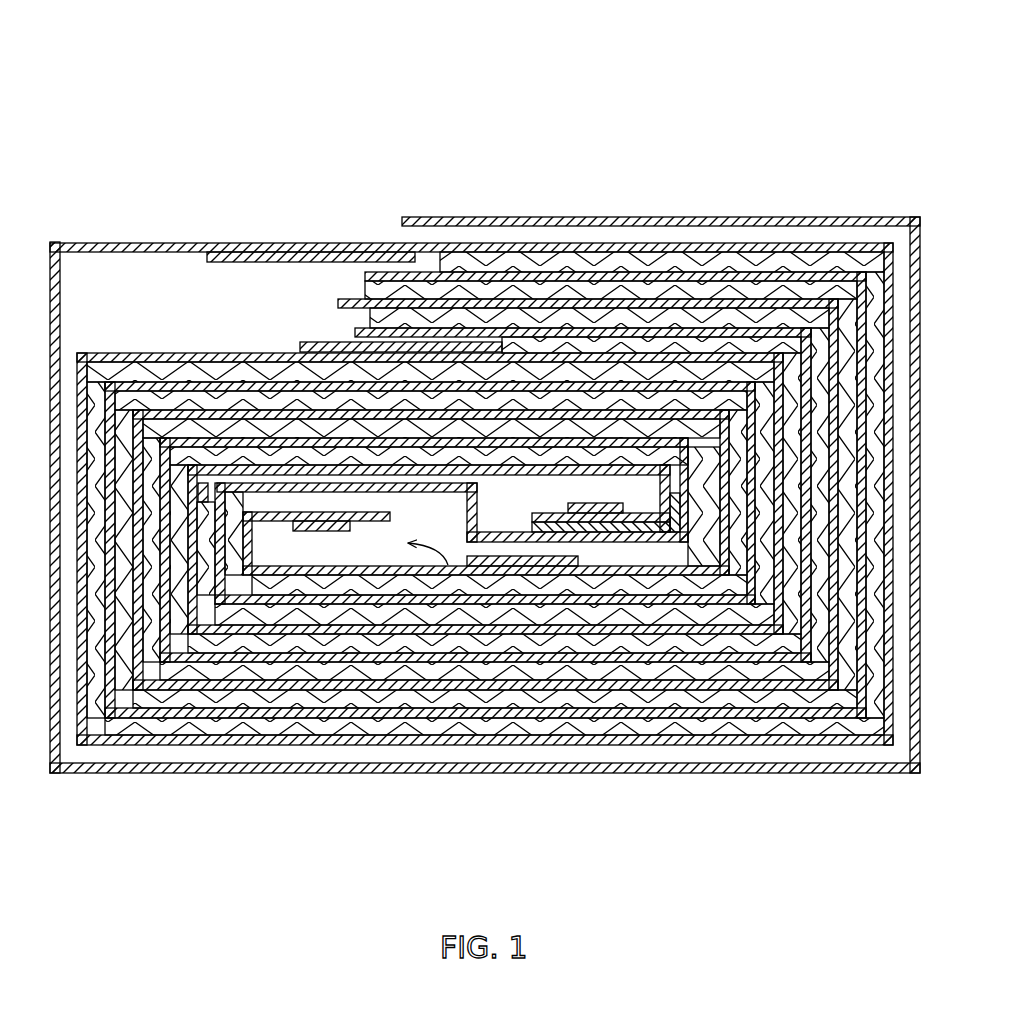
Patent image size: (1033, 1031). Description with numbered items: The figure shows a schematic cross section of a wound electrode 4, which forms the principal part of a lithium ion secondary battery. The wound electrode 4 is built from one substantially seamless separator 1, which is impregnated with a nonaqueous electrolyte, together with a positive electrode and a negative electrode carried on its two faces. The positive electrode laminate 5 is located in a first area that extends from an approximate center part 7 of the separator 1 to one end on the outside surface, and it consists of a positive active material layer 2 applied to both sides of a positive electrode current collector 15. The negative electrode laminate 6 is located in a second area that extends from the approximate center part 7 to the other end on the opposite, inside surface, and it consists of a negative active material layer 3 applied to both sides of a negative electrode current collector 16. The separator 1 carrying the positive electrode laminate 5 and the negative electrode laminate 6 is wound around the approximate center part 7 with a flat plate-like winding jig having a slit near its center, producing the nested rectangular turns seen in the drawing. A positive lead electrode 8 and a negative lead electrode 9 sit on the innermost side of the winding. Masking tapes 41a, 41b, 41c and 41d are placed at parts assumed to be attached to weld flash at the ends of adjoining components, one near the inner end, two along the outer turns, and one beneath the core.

The separator 1 is at (680, 533).
The positive active material layer 2 is at (215, 620).
The negative active material layer 3 is at (712, 398).
The wound electrode 4 is at (808, 100).
The positive electrode laminate 5 is at (645, 505).
The negative electrode laminate 6 is at (448, 565).
The approximate center part 7 is at (478, 502).
The positive lead electrode 8 is at (597, 503).
The negative lead electrode 9 is at (320, 532).
The positive electrode current collector 15 is at (255, 772).
The negative electrode current collector 16 is at (372, 522).
The masking tape 41a is at (213, 482).
The masking tape 41b is at (413, 252).
The masking tape 41c is at (552, 566).
The masking tape 41d is at (318, 342).